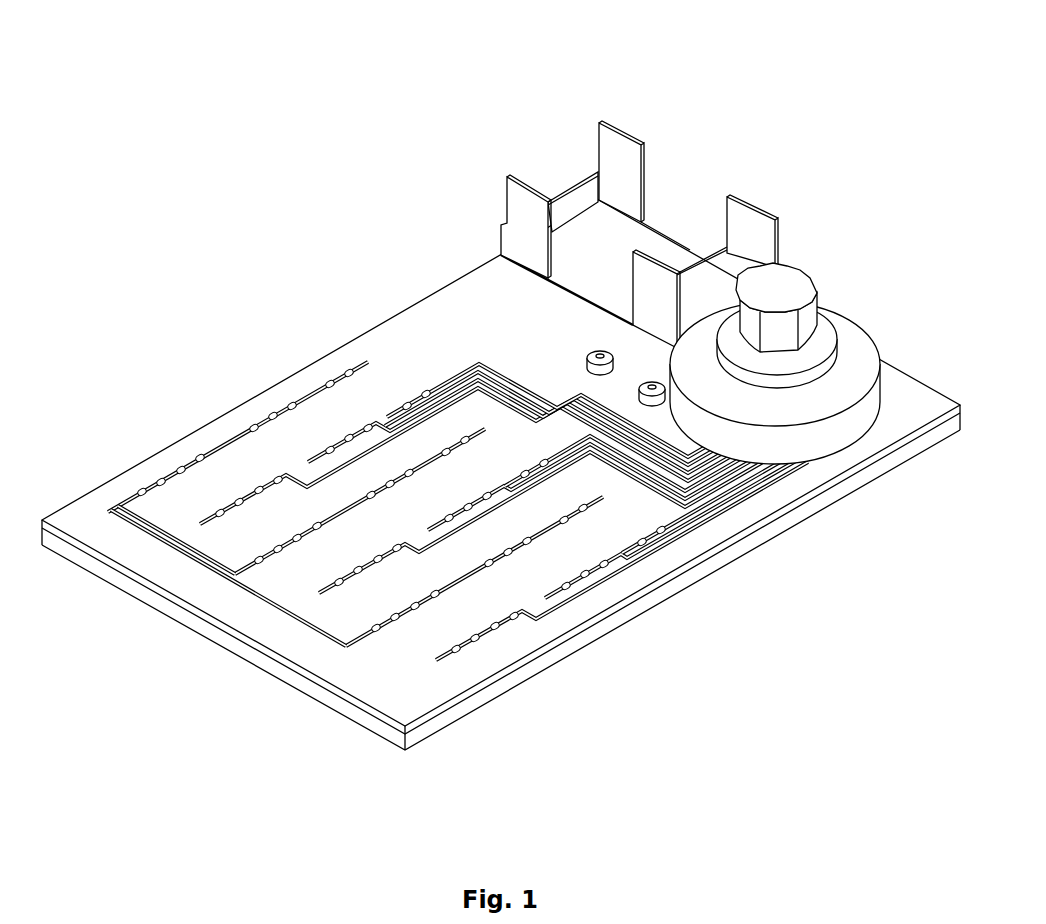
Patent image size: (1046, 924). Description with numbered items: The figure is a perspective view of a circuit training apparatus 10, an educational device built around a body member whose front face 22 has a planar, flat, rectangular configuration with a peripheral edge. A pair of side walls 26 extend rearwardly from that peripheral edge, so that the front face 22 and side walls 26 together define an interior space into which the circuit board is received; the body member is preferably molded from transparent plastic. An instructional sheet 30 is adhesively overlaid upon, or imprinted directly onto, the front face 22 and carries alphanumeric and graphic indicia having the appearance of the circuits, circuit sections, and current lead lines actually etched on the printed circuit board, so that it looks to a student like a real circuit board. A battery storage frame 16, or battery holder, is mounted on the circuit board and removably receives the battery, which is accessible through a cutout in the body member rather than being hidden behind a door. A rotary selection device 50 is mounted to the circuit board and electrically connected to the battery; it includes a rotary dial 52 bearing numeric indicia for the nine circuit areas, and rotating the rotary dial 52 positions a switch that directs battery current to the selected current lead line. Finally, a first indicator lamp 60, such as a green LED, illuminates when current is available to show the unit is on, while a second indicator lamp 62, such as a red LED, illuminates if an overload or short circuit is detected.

The circuit training apparatus 10 is at (303, 106).
The battery storage frame 16 is at (622, 165).
The front face 22 is at (495, 648).
The side walls 26 is at (652, 596).
The instructional sheet 30 is at (520, 332).
The rotary selection device 50 is at (879, 294).
The rotary dial 52 is at (775, 285).
The first indicator lamp 60 is at (603, 350).
The second indicator lamp 62 is at (655, 384).